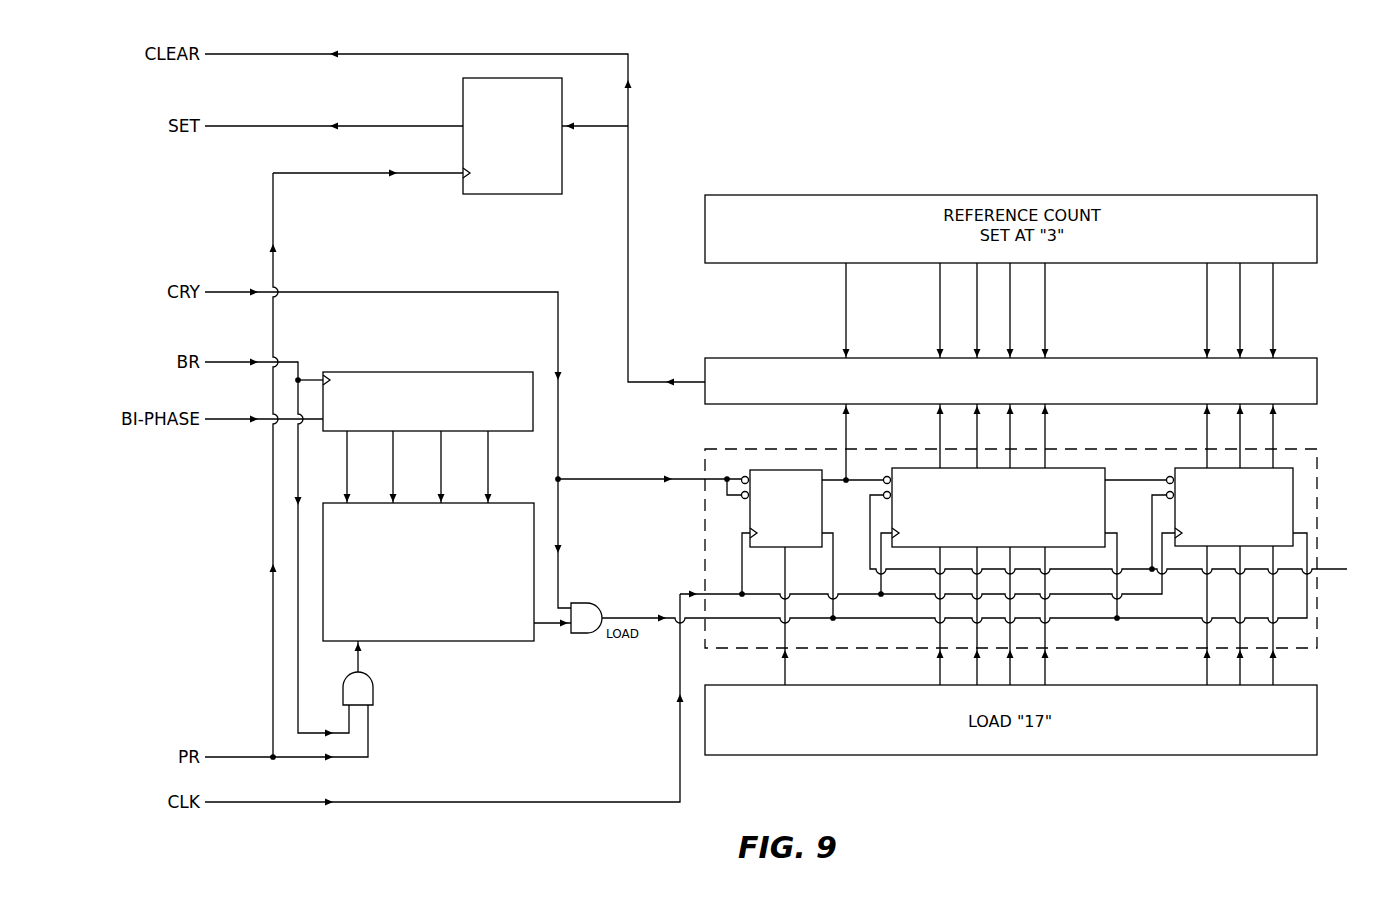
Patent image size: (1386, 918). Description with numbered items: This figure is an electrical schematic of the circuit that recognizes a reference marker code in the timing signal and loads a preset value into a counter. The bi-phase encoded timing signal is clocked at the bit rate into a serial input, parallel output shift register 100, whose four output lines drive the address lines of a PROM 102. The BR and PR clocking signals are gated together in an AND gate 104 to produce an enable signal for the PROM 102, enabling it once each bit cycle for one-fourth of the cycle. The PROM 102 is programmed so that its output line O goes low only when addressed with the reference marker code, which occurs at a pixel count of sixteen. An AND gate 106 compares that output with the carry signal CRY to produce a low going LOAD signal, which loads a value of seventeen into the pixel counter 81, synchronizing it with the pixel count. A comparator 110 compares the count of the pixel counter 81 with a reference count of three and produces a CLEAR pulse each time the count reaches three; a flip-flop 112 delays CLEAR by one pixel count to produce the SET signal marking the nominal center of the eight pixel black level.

The pixel counter 81 is at (1317, 510).
The shift register 100 is at (420, 372).
The PROM 102 is at (487, 641).
The AND gate 104 is at (373, 689).
The AND gate 106 is at (583, 603).
The comparator 110 is at (1317, 368).
The flip-flop 112 is at (562, 113).